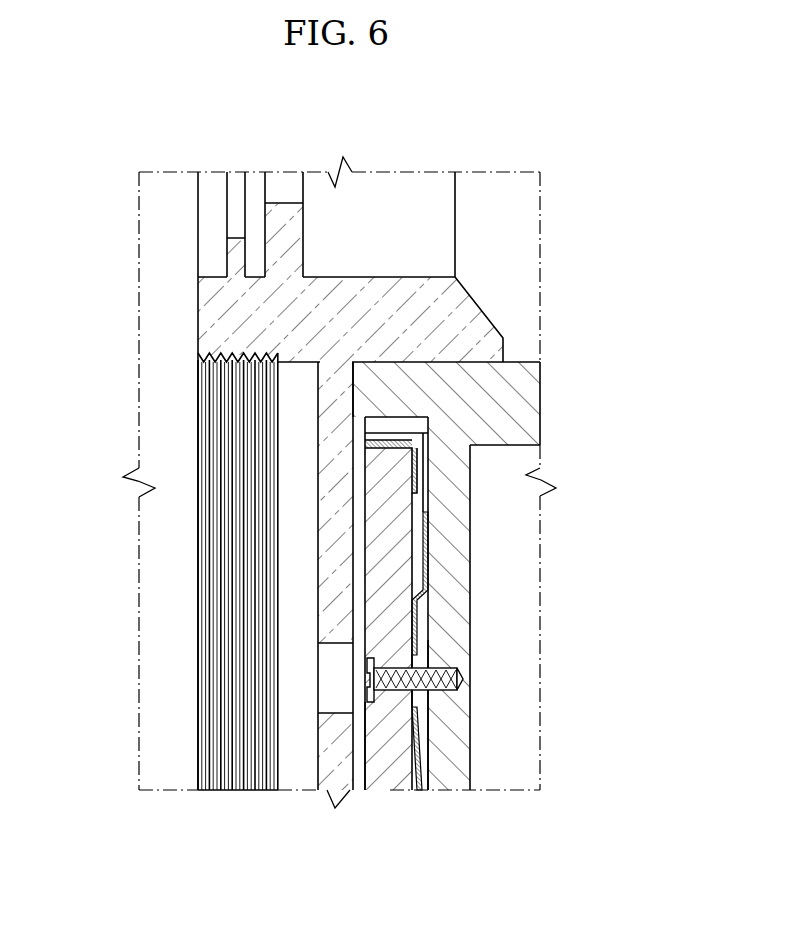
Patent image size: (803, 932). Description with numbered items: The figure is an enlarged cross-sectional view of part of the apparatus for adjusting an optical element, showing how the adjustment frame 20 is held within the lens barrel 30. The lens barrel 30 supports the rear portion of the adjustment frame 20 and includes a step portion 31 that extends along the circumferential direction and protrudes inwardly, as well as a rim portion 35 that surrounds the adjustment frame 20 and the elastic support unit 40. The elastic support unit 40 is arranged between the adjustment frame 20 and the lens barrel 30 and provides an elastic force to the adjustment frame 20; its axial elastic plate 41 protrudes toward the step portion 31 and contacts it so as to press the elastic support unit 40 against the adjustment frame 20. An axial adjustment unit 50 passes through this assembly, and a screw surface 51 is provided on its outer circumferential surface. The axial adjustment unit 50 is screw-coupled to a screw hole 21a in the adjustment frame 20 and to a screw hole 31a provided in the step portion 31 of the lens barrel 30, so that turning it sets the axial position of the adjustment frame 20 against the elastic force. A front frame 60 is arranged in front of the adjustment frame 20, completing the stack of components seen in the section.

The front frame 60 is at (197, 304).
The elastic support unit 40 is at (395, 430).
The axial elastic plate 41 is at (417, 565).
The adjustment frame 20 is at (377, 608).
The axial adjustment unit 50 is at (364, 685).
The rim portion 35 is at (390, 375).
The lens barrel 30 is at (500, 456).
The screw hole 21a is at (383, 697).
The screw surface 51 is at (420, 697).
The step portion 31 is at (452, 697).
The screw hole 31a is at (455, 700).